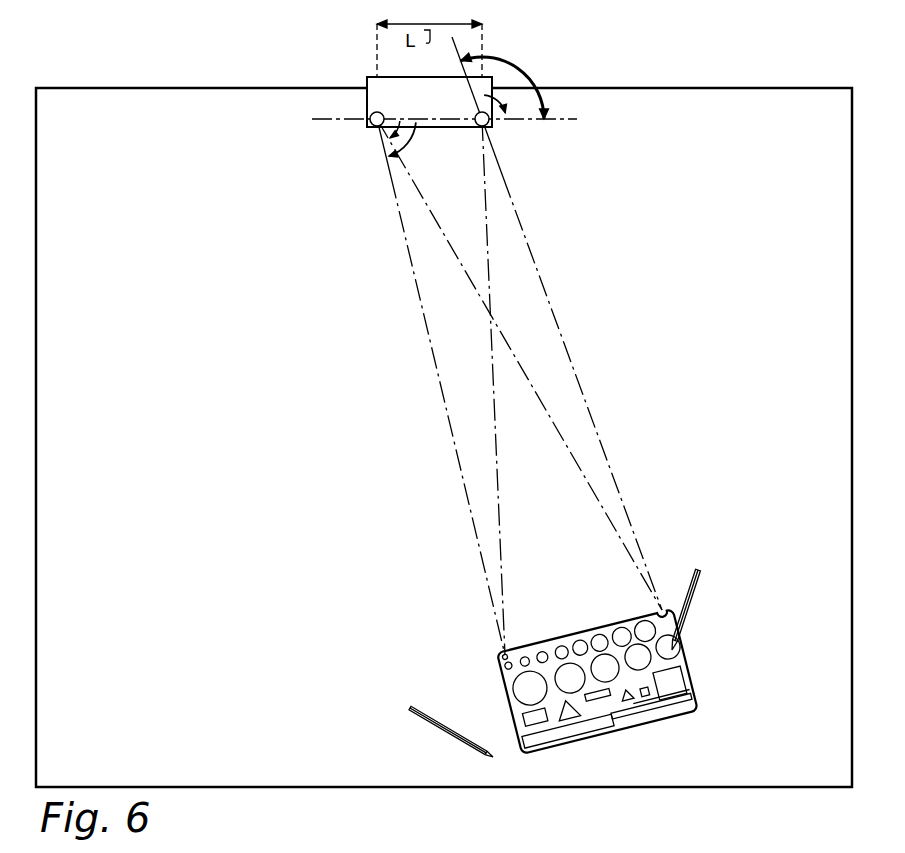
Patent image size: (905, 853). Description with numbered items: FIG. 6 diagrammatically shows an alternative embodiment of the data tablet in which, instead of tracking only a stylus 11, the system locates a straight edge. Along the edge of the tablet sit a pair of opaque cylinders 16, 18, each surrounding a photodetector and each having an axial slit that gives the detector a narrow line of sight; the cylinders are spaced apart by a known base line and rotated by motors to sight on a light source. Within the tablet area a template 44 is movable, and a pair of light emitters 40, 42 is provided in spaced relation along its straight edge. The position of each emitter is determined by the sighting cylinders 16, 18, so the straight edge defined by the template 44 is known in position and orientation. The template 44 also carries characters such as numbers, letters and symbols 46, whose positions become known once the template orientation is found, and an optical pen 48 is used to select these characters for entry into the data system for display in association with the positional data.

The stylus 11 is at (697, 579).
The opaque cylinder 16 is at (477, 116).
The opaque cylinder 18 is at (378, 111).
The light emitter 40 is at (665, 612).
The light emitter 42 is at (509, 652).
The template 44 is at (513, 709).
The symbols 46 is at (622, 741).
The optical pen 48 is at (437, 727).